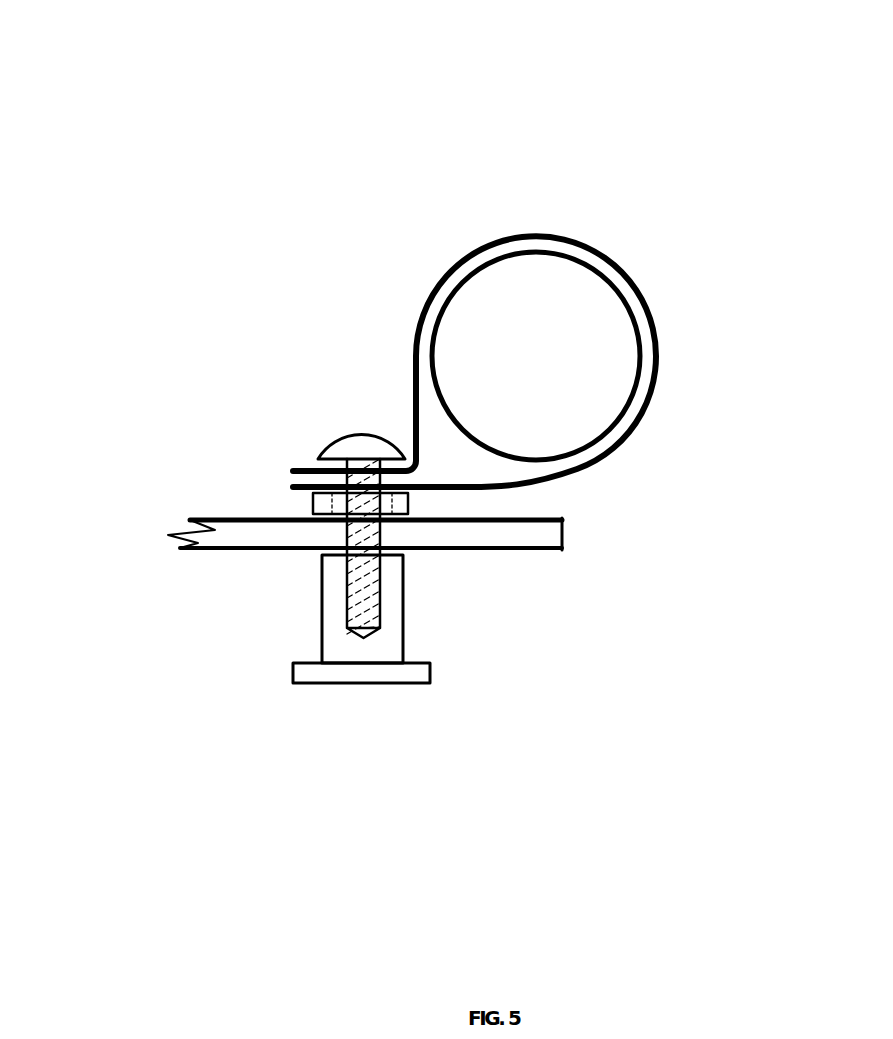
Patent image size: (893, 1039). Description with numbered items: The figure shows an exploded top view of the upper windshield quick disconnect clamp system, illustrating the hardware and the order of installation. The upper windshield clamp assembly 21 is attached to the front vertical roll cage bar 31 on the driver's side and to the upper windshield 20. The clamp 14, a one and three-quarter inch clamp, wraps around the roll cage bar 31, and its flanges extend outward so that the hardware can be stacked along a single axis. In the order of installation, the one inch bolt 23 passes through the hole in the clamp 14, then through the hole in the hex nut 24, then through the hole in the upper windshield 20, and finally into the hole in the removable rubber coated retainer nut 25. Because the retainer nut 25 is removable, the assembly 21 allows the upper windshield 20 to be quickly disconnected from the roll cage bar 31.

The upper windshield clamp assembly 21 is at (285, 73).
The clamp 14 is at (657, 362).
The front vertical roll cage bar driver's side 31 is at (546, 367).
The bolt 23 is at (358, 445).
The hex nut 24 is at (313, 508).
The upper windshield 20 is at (518, 537).
The rubber coated retainer nut 25 is at (335, 607).